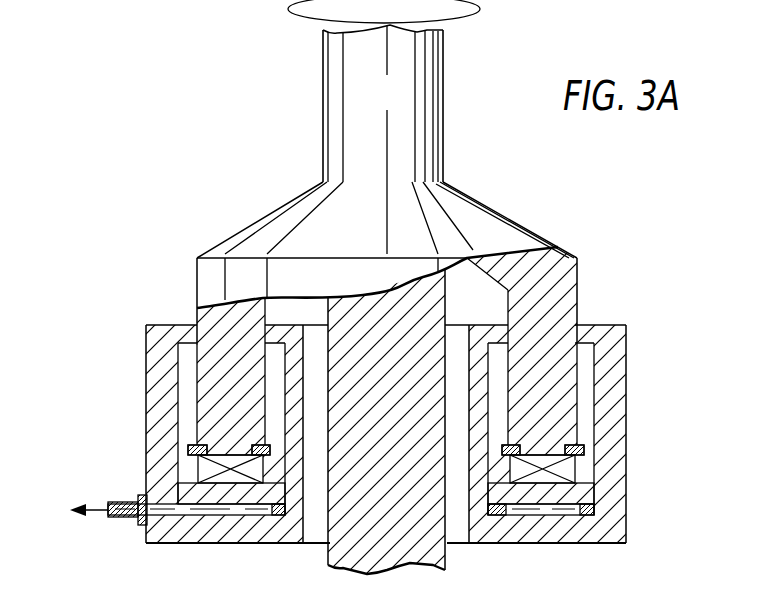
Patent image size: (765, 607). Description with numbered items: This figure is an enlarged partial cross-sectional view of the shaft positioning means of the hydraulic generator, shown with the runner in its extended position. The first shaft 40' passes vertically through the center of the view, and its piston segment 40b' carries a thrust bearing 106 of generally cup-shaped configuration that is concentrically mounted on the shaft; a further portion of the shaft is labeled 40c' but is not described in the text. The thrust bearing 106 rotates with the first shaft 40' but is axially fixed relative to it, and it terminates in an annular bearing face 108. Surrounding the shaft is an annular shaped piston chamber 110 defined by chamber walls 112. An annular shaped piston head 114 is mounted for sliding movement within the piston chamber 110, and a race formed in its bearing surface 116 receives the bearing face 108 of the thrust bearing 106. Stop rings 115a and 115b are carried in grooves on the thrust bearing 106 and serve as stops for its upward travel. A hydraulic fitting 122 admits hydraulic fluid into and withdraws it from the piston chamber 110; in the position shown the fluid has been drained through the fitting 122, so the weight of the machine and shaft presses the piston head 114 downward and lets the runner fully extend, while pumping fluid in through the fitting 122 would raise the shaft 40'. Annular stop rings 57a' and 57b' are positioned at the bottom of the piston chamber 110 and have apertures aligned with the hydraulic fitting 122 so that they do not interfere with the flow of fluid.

The first shaft 40' is at (376, 309).
The piston segment 40b' is at (387, 351).
The shaft outer layer 40c' is at (503, 144).
The thrust bearing 106 is at (455, 206).
The annular shaped piston chamber 110 is at (187, 370).
The chamber walls 112 is at (318, 505).
The stop ring 115a is at (305, 430).
The stop ring 115b is at (192, 448).
The bearing surface 116 is at (583, 466).
The annular bearing face 108 is at (208, 468).
The annular shaped piston head 114 is at (188, 486).
The hydraulic fitting 122 is at (126, 523).
The annular stop ring 57a' is at (223, 548).
The annular stop ring 57b' is at (260, 555).